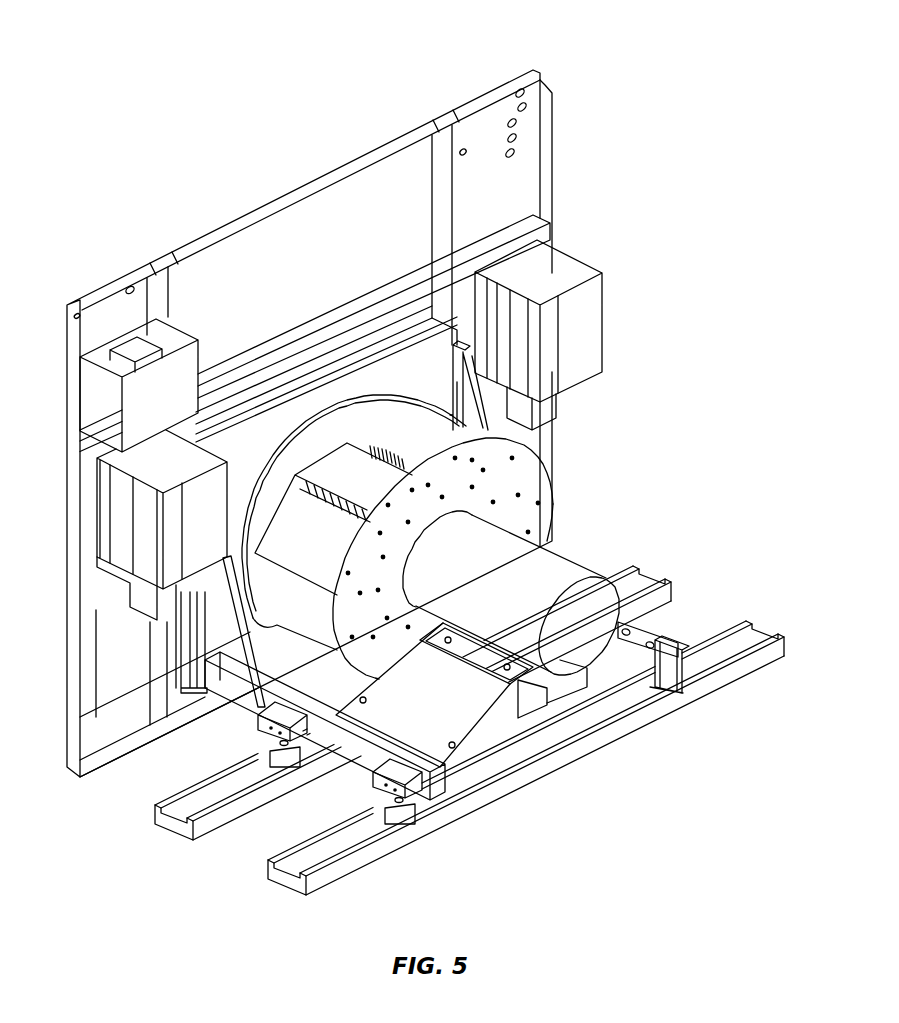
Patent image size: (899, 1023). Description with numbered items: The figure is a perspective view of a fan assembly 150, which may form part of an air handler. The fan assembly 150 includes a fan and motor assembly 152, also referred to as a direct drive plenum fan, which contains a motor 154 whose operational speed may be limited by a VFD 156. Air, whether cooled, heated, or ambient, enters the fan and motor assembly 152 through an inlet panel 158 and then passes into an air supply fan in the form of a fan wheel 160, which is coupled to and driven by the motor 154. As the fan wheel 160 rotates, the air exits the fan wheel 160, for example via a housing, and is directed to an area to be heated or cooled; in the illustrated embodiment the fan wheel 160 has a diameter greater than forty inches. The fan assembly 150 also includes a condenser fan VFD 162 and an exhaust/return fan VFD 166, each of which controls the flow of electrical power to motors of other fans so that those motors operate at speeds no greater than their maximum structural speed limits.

The fan assembly 150 is at (626, 44).
The fan and motor assembly 152 is at (640, 501).
The motor 154 is at (561, 560).
The VFD 156 is at (105, 514).
The inlet panel 158 is at (322, 408).
The fan wheel 160 is at (450, 474).
The condenser fan VFD 162 is at (98, 403).
The exhaust/return fan VFD 166 is at (603, 318).